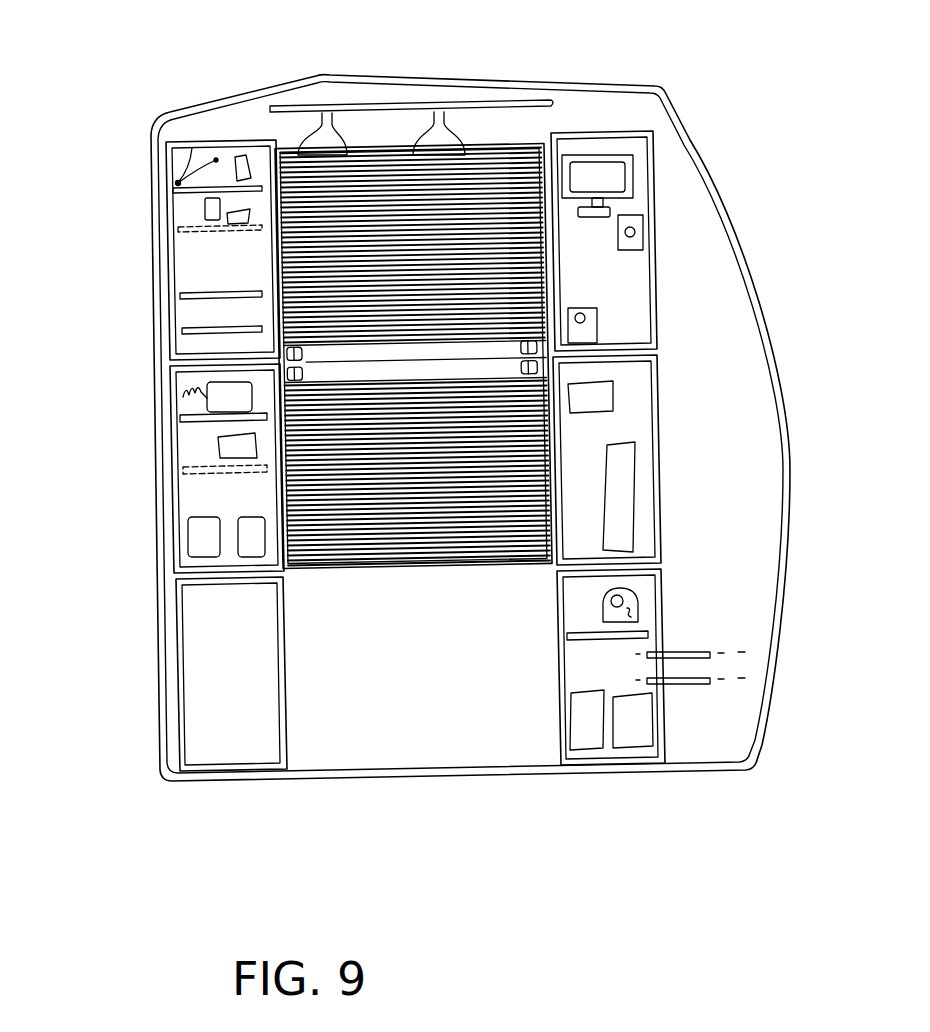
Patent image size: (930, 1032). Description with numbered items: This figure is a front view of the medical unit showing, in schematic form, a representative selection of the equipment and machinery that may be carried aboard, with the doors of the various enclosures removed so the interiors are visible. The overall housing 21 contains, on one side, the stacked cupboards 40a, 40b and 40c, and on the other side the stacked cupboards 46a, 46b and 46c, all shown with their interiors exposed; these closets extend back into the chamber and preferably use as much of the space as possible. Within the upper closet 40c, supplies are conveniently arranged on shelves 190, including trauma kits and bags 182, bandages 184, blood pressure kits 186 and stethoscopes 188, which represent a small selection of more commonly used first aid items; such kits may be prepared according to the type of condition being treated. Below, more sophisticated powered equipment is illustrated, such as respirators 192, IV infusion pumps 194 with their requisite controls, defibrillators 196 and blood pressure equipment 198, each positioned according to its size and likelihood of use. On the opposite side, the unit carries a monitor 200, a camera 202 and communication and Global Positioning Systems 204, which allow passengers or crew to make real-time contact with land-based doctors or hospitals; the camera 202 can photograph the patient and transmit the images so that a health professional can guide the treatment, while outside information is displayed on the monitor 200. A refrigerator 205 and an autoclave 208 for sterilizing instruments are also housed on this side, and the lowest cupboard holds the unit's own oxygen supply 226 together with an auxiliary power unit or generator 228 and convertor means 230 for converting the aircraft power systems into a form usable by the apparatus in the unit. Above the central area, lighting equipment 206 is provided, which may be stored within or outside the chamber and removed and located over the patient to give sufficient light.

The housing 21 is at (200, 781).
The lighting equipment 206 is at (324, 108).
The stacked cupboard 40a is at (188, 673).
The stacked cupboard 40b is at (169, 488).
The stacked cupboard 40c is at (165, 211).
The stacked cupboard 46a is at (651, 701).
The stacked cupboard 46b is at (652, 460).
The stacked cupboard 46c is at (701, 242).
The trauma kits and bags 182 is at (238, 157).
The bandages 184 is at (205, 204).
The blood pressure kits 186 is at (233, 218).
The stethoscopes 188 is at (180, 182).
The shelves 190 is at (187, 296).
The respirators 192 is at (220, 445).
The IV infusion pumps 194 is at (207, 403).
The defibrillators 196 is at (190, 535).
The blood pressure equipment 198 is at (242, 546).
The monitor 200 is at (630, 168).
The camera 202 is at (635, 223).
The Global Positioning Systems 204 is at (597, 330).
The refrigerator 205 is at (632, 475).
The autoclave 208 is at (597, 400).
The oxygen supply 226 is at (633, 607).
The auxiliary power unit or generator 228 is at (640, 733).
The convertor means 230 is at (588, 740).